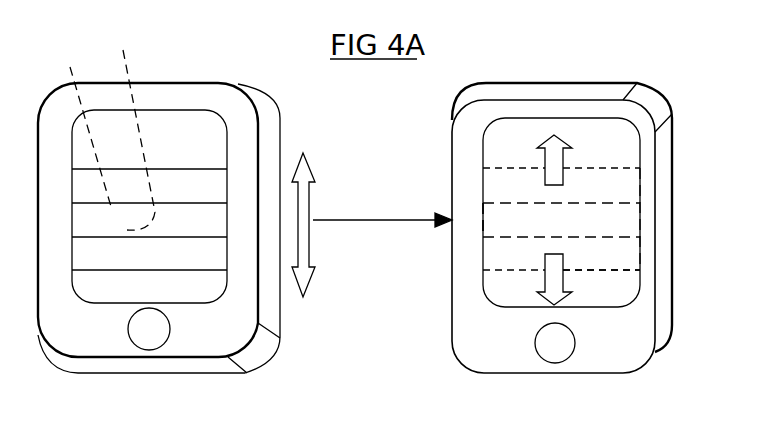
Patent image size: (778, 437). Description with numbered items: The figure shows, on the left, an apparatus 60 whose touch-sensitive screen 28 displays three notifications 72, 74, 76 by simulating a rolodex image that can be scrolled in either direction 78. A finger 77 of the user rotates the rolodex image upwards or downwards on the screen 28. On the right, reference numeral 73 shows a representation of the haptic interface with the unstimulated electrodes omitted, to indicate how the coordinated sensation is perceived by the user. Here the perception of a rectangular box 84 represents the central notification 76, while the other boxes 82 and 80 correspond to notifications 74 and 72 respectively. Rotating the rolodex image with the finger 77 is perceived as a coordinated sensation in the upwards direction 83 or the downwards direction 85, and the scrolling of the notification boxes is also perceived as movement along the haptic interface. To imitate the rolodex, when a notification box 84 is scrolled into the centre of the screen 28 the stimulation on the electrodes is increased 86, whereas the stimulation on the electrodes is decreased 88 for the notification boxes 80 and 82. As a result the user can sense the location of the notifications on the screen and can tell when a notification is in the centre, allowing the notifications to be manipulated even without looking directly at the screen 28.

The touch-sensitive screen 28 is at (104, 288).
The apparatus 60 is at (236, 73).
The notification 72 is at (212, 253).
The representation of the haptic interface 73 is at (612, 68).
The notification 74 is at (212, 187).
The central notification 76 is at (212, 218).
The finger 77 is at (138, 65).
The scroll direction 78 is at (313, 203).
The box 80 is at (637, 263).
The box 82 is at (622, 170).
The upwards direction 83 is at (562, 132).
The rectangular box 84 is at (638, 217).
The downwards direction 85 is at (563, 292).
The increased stimulation 86 is at (483, 237).
The decreased stimulation 88 is at (632, 270).